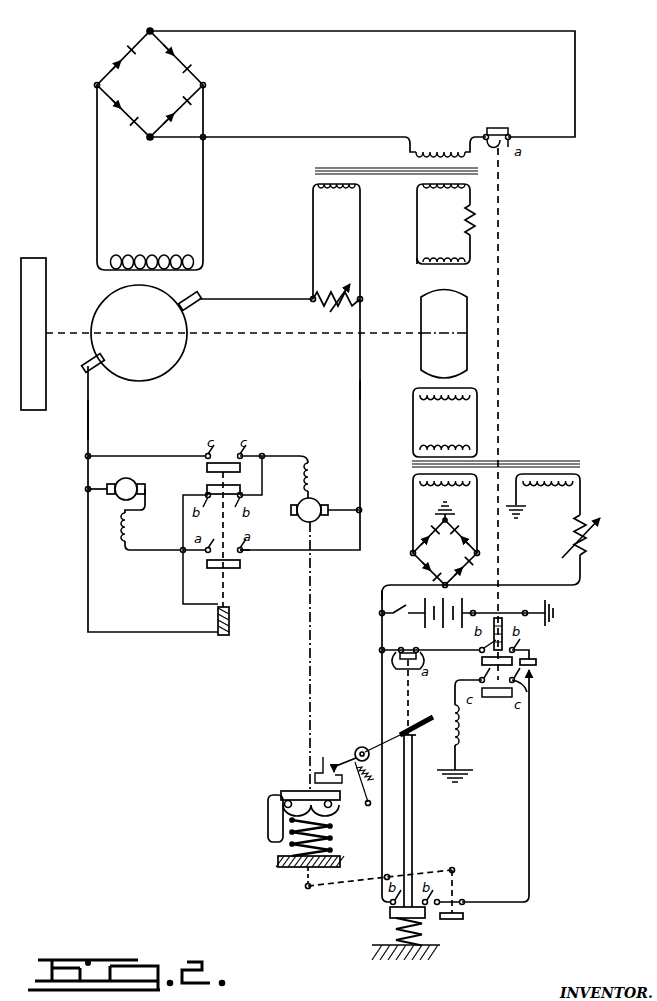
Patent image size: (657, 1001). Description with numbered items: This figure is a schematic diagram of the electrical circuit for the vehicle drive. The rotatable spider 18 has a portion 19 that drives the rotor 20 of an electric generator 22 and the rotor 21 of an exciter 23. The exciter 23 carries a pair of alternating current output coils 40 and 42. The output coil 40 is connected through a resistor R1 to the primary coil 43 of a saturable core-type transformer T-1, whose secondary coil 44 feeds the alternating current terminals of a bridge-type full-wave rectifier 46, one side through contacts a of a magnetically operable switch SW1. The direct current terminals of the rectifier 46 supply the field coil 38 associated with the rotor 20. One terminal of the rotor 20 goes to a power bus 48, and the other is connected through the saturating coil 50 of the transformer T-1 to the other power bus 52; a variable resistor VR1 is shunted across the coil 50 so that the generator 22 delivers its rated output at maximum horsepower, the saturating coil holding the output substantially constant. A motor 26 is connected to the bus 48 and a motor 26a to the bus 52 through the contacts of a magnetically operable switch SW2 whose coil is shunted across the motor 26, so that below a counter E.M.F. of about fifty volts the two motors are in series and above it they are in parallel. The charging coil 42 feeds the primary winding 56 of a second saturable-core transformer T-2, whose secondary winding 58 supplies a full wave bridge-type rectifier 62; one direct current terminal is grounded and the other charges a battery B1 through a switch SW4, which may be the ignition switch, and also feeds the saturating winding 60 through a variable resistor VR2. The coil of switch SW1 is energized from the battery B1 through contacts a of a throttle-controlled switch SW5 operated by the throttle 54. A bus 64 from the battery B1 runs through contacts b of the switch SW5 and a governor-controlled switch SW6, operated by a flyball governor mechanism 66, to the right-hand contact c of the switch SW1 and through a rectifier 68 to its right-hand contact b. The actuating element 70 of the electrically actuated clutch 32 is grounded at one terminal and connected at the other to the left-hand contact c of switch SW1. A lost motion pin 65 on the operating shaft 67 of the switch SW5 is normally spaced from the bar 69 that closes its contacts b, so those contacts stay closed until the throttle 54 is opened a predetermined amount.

The rotatable spider 18 is at (31, 256).
The portion of the spider 19 is at (262, 336).
The rotor of the electric generator 20 is at (160, 365).
The rotor of the exciter 21 is at (460, 358).
The electric generator 22 is at (207, 290).
The exciter 23 is at (480, 306).
The motor 26 is at (130, 484).
The motor 26a is at (312, 500).
The electrically actuated clutch 32 is at (464, 745).
The field coil 38 is at (170, 232).
The alternating current output coil 40 is at (440, 250).
The battery charging coil 42 is at (438, 403).
The primary coil of transformer T-1 43 is at (430, 195).
The secondary coil of transformer T-1 44 is at (440, 150).
The bridge-type full-wave rectifier 46 is at (205, 79).
The power bus 48 is at (88, 434).
The saturating coil of transformer T-1 50 is at (330, 195).
The power bus 52 is at (362, 392).
The throttle 54 is at (358, 744).
The primary winding of transformer T-2 56 is at (445, 446).
The secondary winding of transformer T-2 58 is at (440, 488).
The saturating winding of transformer T-2 60 is at (533, 485).
The full wave bridge-type rectifier 62 is at (410, 552).
The bus 64 is at (396, 573).
The pin 65 is at (410, 895).
The flyball governor mechanism 66 is at (272, 856).
The operating shaft of switch SW5 67 is at (414, 812).
The rectifier 68 is at (540, 662).
The bar 69 is at (432, 912).
The actuating element of the clutch 70 is at (462, 736).
The saturable core-type transformer T-1 is at (480, 172).
The saturable-core-type transformer T-2 is at (582, 467).
The resistor R1 is at (478, 218).
The variable resistor VR1 is at (337, 307).
The variable resistor VR2 is at (592, 536).
The magnetically operable switch SW1 is at (500, 421).
The magnetically operable switch SW2 is at (226, 592).
The switch SW4 is at (400, 620).
The throttle-controlled switch SW5 is at (404, 766).
The governor-controlled switch SW6 is at (462, 894).
The battery B1 is at (440, 628).